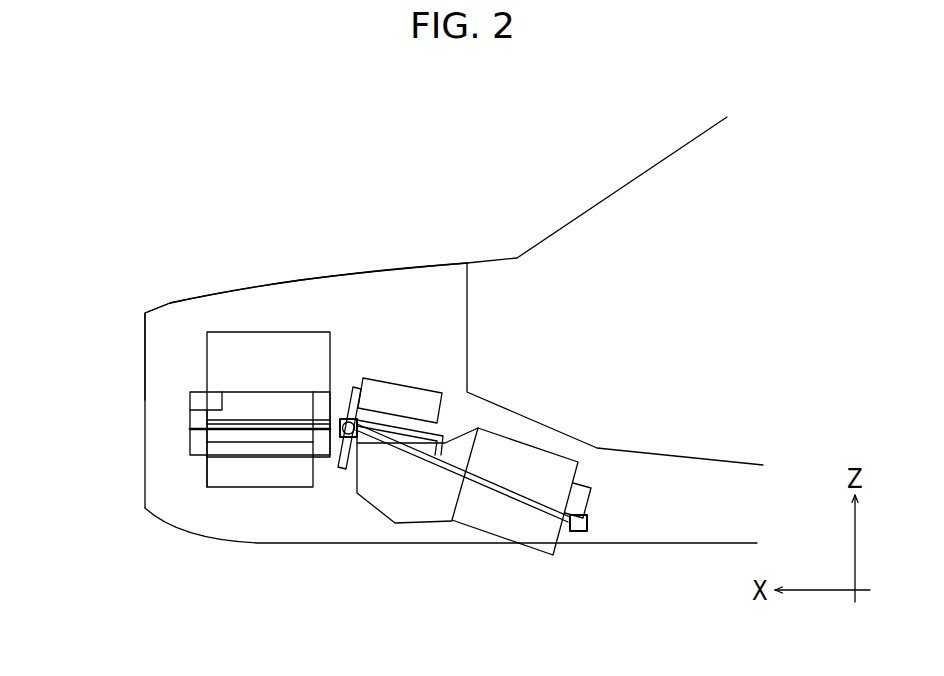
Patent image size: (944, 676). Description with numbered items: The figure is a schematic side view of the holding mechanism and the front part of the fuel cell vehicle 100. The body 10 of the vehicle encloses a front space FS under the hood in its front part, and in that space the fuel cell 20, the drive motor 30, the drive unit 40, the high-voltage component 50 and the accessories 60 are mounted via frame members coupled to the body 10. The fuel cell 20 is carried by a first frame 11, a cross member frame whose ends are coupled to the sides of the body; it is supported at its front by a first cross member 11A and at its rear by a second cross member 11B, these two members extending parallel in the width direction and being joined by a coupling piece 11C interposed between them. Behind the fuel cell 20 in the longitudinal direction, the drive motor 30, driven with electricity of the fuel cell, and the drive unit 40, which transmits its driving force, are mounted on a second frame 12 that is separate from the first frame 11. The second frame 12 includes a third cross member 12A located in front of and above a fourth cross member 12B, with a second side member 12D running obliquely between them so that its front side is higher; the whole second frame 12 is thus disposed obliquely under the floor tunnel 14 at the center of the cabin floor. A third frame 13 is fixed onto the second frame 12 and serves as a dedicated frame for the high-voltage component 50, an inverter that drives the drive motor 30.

The fuel cell vehicle 100 is at (857, 123).
The body 10 is at (170, 302).
The front space FS is at (360, 301).
The floor tunnel 14 is at (663, 450).
The fuel cell 20 is at (261, 331).
The first frame 11 is at (178, 456).
The first cross member 11A is at (187, 418).
The second cross member 11B is at (310, 435).
The coupling piece 11C is at (240, 419).
The accessories 60 is at (202, 482).
The high-voltage component 50 is at (413, 386).
The third frame 13 is at (442, 428).
The second frame 12 is at (497, 491).
The third cross member 12A is at (339, 418).
The fourth cross member 12B is at (588, 533).
The second side member 12D is at (477, 483).
The drive motor 30 is at (530, 445).
The drive unit 40 is at (407, 508).